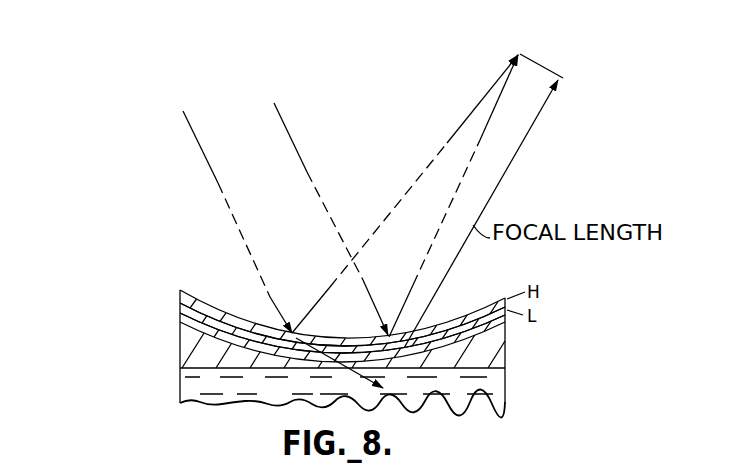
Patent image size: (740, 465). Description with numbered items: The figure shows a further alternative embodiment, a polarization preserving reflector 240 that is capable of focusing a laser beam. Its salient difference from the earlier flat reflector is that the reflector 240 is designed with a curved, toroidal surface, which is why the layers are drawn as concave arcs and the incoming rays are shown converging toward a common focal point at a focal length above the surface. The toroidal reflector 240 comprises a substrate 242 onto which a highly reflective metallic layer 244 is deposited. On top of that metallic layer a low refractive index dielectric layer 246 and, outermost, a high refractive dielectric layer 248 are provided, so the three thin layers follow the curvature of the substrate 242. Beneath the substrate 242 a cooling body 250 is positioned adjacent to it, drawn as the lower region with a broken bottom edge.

The polarization preserving reflector 240 is at (140, 58).
The high refractive dielectric layer 248 is at (180, 292).
The low refractive index dielectric layer 246 is at (180, 305).
The highly reflective metallic layer 244 is at (180, 315).
The substrate 242 is at (180, 342).
The cooling body 250 is at (180, 383).